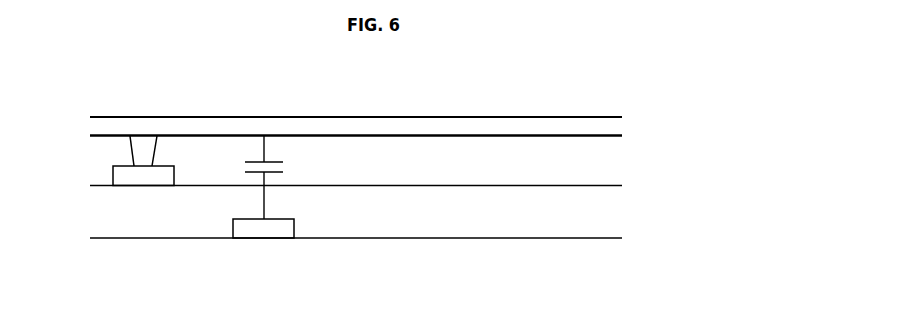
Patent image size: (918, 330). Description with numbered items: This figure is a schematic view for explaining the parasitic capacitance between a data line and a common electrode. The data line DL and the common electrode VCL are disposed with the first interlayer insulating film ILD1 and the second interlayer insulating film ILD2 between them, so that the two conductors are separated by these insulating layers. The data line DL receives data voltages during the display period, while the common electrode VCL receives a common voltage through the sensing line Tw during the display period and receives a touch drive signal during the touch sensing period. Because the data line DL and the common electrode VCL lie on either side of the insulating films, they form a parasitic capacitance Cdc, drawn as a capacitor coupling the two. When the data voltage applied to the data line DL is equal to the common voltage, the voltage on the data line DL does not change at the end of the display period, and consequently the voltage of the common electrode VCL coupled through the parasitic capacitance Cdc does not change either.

The common electrode VCL is at (504, 117).
The second interlayer insulating film ILD2 is at (615, 161).
The first interlayer insulating film ILD1 is at (615, 214).
The sensing line Tw is at (113, 176).
The parasitic capacitance Cdc is at (282, 177).
The data line DL is at (264, 232).